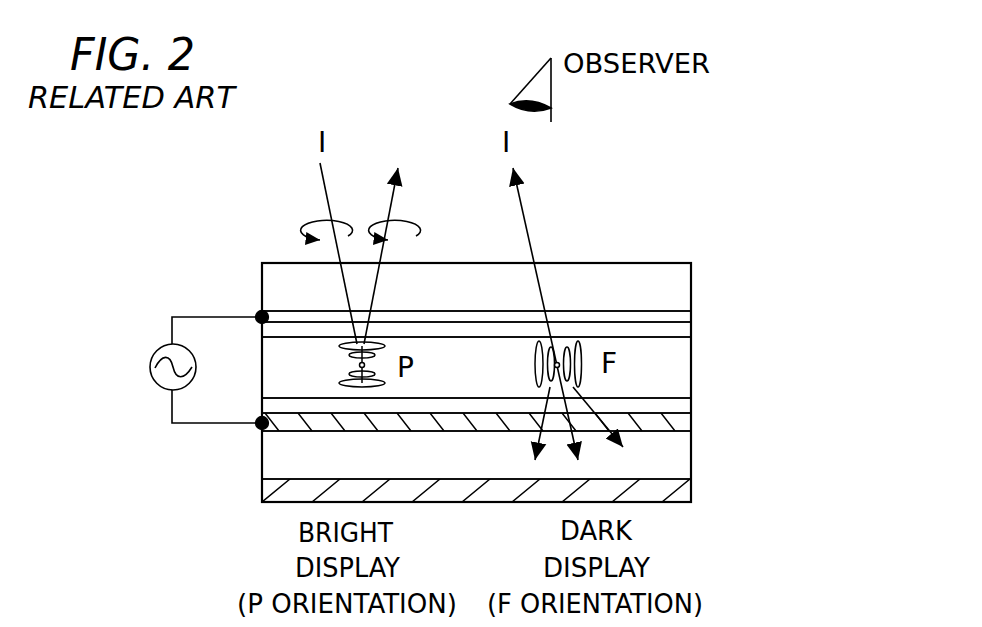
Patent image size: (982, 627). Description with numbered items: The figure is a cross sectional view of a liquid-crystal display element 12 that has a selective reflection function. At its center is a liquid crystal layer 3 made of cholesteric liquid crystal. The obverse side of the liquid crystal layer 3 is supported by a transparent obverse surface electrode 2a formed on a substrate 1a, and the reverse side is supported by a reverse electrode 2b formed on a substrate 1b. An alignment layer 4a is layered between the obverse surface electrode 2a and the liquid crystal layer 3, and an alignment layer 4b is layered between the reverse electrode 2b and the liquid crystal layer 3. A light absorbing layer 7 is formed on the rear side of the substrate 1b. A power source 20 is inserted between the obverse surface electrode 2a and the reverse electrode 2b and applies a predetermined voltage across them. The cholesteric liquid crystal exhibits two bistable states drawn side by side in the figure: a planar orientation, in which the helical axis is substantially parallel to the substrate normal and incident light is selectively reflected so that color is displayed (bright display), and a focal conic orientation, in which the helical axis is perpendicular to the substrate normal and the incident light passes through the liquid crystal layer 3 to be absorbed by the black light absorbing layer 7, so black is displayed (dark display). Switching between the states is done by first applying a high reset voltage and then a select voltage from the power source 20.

The liquid-crystal display element 12 is at (668, 242).
The substrate 1a is at (693, 274).
The transparent obverse surface electrode 2a is at (693, 308).
The alignment layer 4a is at (693, 331).
The liquid crystal layer 3 is at (693, 366).
The alignment layer 4b is at (693, 399).
The reverse electrode 2b is at (693, 424).
The substrate 1b is at (693, 454).
The light absorbing layer 7 is at (693, 491).
The power source 20 is at (148, 366).